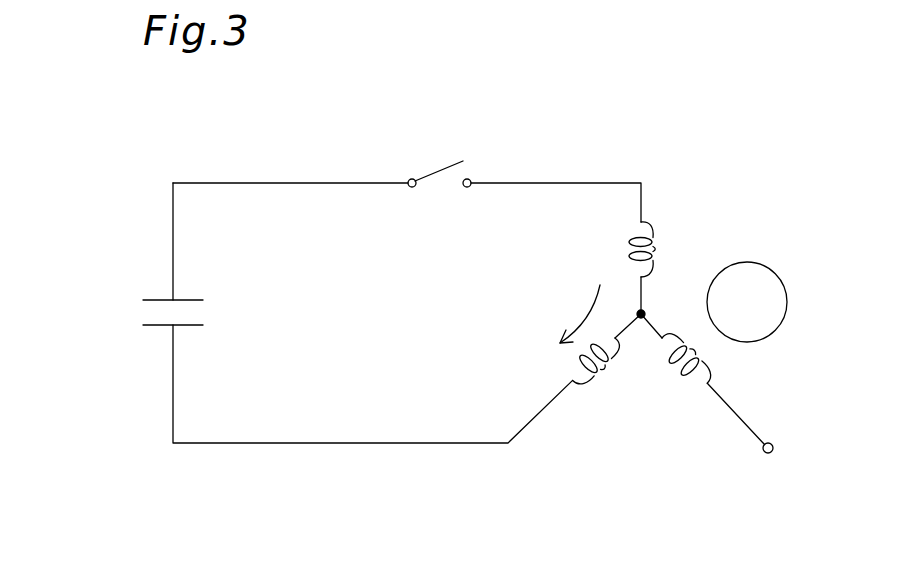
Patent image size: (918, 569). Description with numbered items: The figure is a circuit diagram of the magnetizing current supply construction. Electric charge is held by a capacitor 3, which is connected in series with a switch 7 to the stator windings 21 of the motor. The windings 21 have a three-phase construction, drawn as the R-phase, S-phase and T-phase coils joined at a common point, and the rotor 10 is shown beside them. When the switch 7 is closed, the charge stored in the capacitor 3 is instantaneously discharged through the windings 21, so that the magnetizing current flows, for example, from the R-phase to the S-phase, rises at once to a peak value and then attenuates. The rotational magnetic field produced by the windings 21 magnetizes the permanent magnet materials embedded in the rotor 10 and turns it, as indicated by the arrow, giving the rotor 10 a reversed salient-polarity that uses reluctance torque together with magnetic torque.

The capacitor 3 is at (197, 298).
The switch 7 is at (437, 172).
The windings 21 is at (647, 219).
The rotor 10 is at (777, 278).